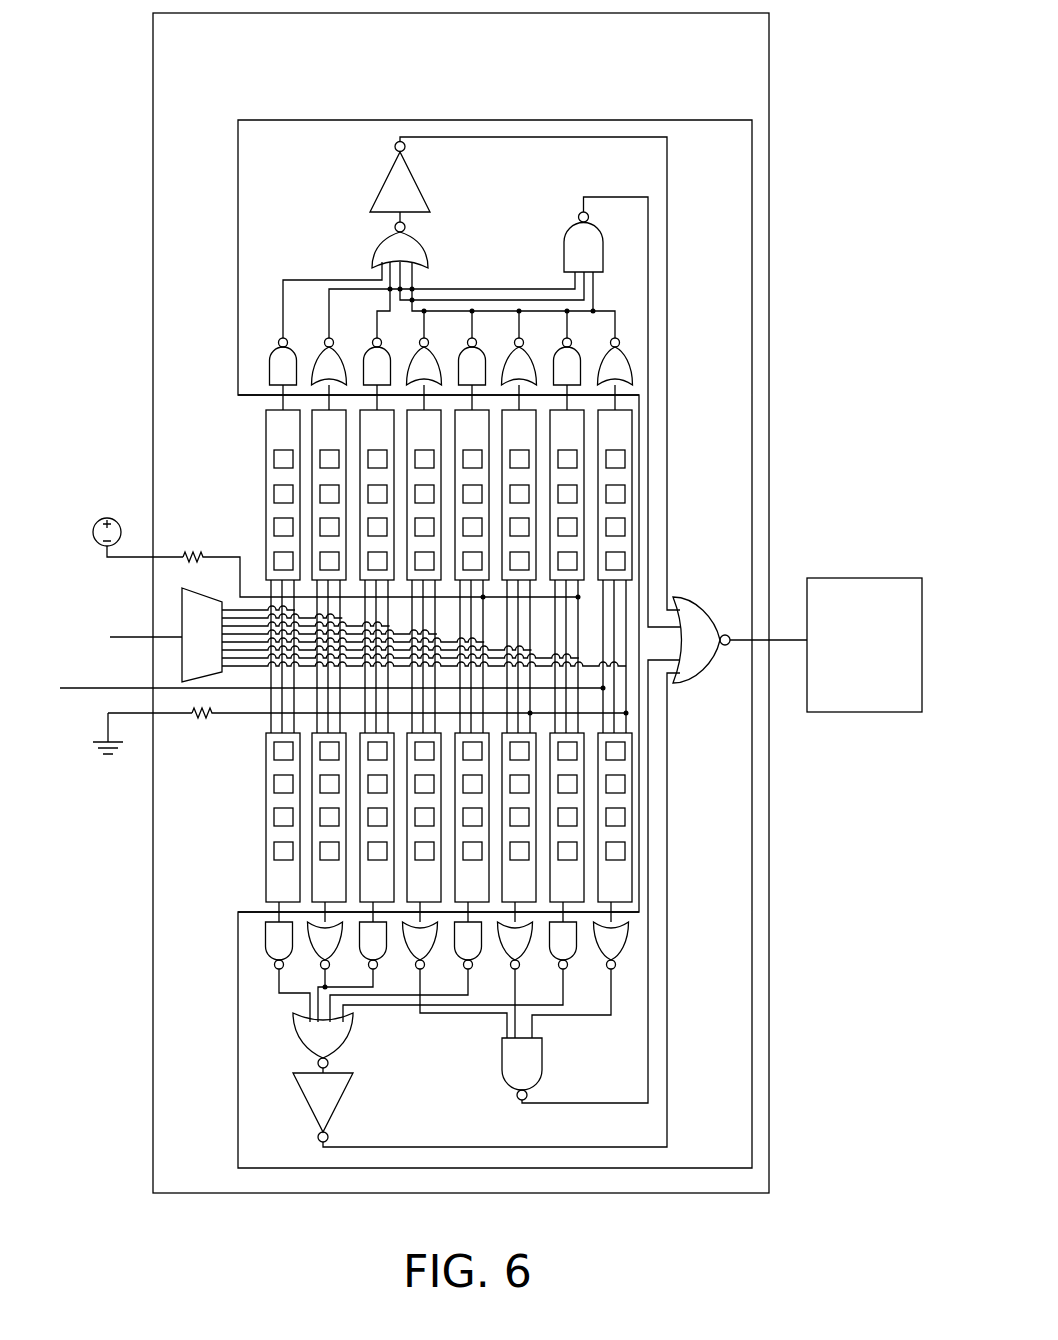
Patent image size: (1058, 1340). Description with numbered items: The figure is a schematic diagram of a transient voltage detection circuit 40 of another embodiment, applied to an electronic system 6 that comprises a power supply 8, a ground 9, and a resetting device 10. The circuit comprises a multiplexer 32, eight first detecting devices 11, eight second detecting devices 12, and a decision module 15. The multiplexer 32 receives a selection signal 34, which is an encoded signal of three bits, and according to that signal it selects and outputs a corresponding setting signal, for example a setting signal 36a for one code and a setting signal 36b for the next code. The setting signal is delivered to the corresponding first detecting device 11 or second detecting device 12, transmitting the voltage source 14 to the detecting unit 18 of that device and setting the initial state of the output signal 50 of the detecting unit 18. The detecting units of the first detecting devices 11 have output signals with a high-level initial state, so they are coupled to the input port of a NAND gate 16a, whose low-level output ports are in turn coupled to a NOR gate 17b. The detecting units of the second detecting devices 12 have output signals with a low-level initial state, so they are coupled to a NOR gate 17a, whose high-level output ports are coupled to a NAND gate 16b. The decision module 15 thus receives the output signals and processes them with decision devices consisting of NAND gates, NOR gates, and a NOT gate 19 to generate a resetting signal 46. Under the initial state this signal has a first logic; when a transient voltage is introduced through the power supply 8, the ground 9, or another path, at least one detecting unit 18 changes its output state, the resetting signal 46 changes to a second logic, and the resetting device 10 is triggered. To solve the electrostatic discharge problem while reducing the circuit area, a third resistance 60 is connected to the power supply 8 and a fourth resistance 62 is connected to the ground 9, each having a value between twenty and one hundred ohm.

The electronic system 6 is at (797, 304).
The power supply 8 is at (108, 518).
The ground 9 is at (108, 757).
The resetting device 10 is at (847, 577).
The first detecting device 11 is at (425, 656).
The second detecting device 12 is at (472, 656).
The voltage source 14 is at (73, 690).
The decision module 15 is at (360, 120).
The NAND gate 16a is at (283, 374).
The NAND gate 16b is at (504, 412).
The NOR gate 17a is at (329, 374).
The NOR gate 17b is at (438, 280).
The detecting unit 18 is at (266, 815).
The NOT gate 19 is at (525, 373).
The multiplexer 32 is at (182, 596).
The selection signal 34 is at (132, 637).
The setting signal 36a is at (232, 606).
The setting signal 36b is at (252, 610).
The transient voltage detection circuit 40 is at (153, 218).
The resetting signal 46 is at (803, 638).
The output signal 50 is at (267, 405).
The third resistance 60 is at (190, 553).
The fourth resistance 62 is at (204, 723).